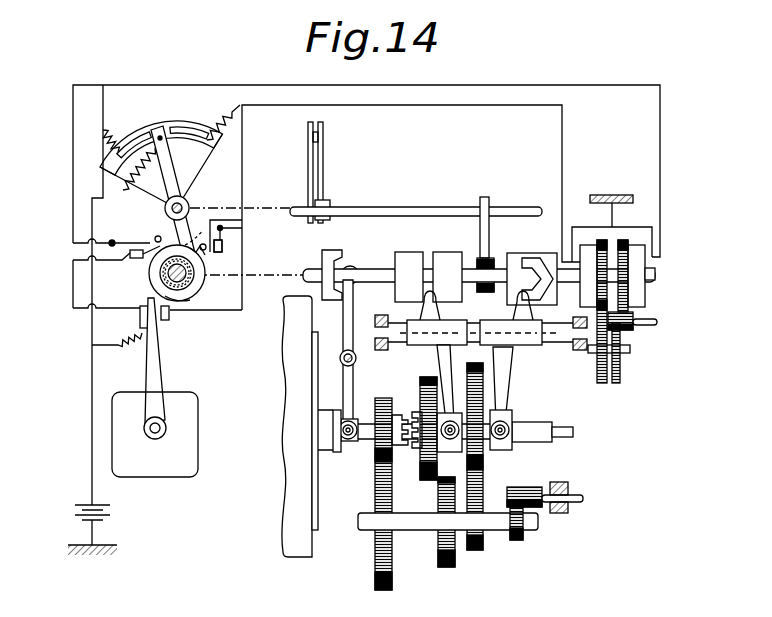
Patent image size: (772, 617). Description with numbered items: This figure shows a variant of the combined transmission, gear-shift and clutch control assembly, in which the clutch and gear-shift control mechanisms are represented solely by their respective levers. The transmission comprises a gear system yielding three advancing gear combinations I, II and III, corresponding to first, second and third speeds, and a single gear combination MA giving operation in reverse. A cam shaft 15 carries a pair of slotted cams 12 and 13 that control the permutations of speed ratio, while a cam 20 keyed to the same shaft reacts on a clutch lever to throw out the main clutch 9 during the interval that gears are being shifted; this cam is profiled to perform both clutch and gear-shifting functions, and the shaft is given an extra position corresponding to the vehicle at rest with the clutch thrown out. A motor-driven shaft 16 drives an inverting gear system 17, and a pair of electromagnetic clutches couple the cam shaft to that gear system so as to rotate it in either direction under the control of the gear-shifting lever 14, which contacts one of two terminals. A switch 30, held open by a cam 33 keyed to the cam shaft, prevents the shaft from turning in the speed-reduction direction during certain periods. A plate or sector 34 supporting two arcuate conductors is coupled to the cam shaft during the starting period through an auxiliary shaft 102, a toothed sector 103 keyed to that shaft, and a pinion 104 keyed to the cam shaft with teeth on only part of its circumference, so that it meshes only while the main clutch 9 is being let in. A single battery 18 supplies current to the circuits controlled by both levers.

The battery 18 is at (110, 513).
The plate 34 is at (152, 186).
The auxiliary shaft 102 is at (193, 203).
The toothed sector 103 is at (200, 232).
The switch 30 is at (133, 256).
The cam 33 is at (150, 271).
The cam shaft 15 is at (190, 278).
The pinion 104 is at (162, 283).
The lever 14 is at (152, 378).
The cam 20 is at (326, 263).
The cam 13 is at (407, 260).
The cam 12 is at (520, 262).
The main clutch 9 is at (336, 426).
The gear combination III is at (390, 580).
The gear combination II is at (446, 560).
The gear combination I is at (478, 555).
The gear combination MA is at (519, 542).
The system of gears 17 is at (620, 370).
The shaft 16 is at (636, 322).